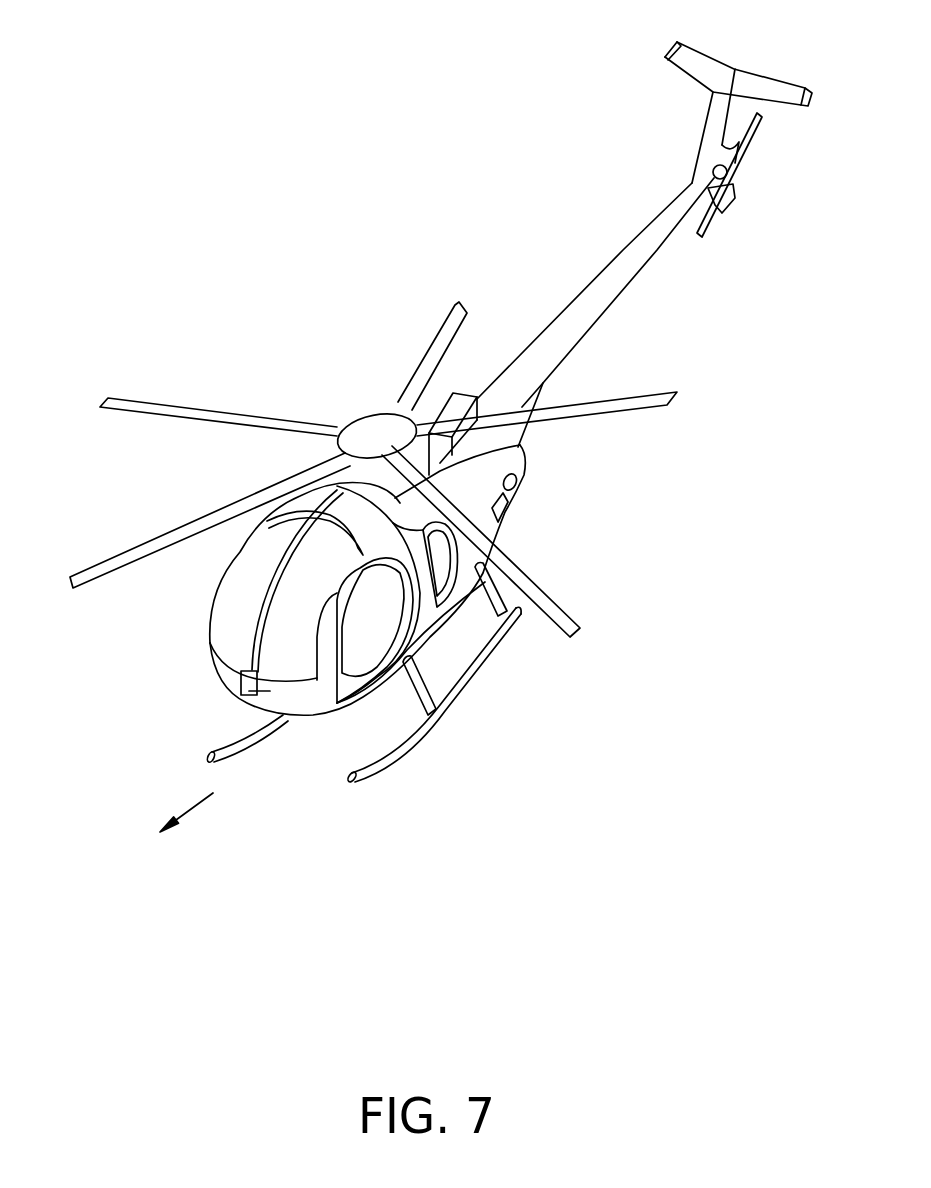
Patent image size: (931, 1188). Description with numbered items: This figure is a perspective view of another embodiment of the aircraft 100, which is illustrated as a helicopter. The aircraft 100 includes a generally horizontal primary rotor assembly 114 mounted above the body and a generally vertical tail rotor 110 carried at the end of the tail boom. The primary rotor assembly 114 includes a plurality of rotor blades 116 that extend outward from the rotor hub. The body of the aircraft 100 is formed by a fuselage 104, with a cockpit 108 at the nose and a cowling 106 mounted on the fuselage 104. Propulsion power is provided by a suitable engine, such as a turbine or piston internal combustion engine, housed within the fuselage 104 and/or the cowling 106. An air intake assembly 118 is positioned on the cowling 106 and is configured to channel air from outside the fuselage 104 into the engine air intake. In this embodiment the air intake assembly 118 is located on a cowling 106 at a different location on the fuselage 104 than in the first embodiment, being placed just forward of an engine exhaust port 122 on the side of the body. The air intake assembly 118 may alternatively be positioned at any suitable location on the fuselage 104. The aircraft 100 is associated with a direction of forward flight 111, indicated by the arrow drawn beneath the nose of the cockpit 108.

The aircraft 100 is at (330, 302).
The fuselage 104 is at (258, 693).
The cowling 106 is at (514, 497).
The cockpit 108 is at (218, 618).
The tail rotor 110 is at (713, 168).
The direction of forward flight 111 is at (197, 807).
The primary rotor assembly 114 is at (155, 377).
The rotor blades 116 is at (652, 407).
The air intake assembly 118 is at (501, 520).
The engine exhaust port 122 is at (516, 476).